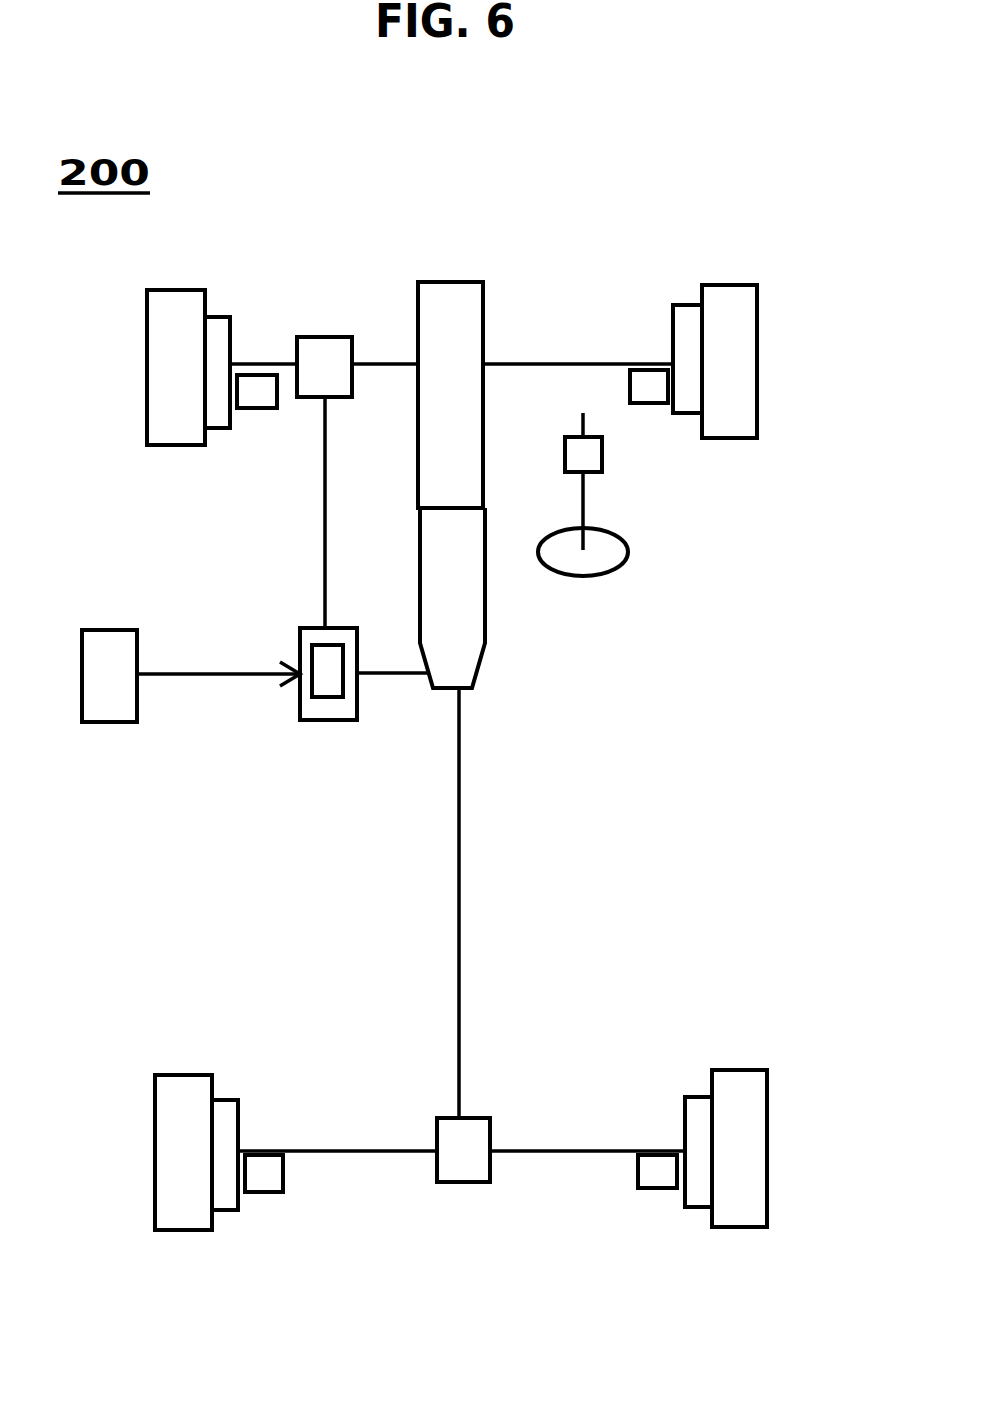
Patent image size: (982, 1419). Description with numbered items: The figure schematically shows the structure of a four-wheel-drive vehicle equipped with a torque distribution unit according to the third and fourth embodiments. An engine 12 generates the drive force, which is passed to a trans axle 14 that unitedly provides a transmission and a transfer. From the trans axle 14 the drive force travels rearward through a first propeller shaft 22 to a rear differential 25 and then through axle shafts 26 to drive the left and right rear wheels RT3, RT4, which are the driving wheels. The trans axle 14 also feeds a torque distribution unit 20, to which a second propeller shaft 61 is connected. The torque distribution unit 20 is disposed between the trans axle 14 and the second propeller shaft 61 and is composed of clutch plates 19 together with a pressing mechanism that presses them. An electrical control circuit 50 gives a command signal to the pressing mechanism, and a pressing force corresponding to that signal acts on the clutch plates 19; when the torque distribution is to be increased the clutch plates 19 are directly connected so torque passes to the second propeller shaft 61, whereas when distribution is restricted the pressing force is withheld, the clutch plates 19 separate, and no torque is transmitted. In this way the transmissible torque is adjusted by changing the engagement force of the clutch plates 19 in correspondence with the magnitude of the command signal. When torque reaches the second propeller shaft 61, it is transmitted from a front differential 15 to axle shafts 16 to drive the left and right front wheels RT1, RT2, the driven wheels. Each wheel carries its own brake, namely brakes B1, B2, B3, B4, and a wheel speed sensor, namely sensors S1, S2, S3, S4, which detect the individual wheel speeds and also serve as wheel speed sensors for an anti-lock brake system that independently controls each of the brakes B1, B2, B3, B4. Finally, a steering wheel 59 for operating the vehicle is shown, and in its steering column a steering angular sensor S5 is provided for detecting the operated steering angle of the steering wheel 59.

The engine 12 is at (452, 282).
The trans axle 14 is at (485, 582).
The front differential 15 is at (322, 337).
The axle shafts 16 is at (258, 364).
The second propeller shaft 61 is at (325, 557).
The torque distribution unit 20 is at (297, 706).
The clutch plates 19 is at (330, 697).
The electrical control circuit 50 is at (115, 722).
The first propeller shaft 22 is at (462, 990).
The rear differential 25 is at (477, 1155).
The axle shafts 26 is at (313, 1152).
The steering wheel 59 is at (603, 557).
The steering angular sensor S5 is at (590, 472).
The front wheel RT1 is at (170, 380).
The brake B1 is at (210, 318).
The wheel speed sensor S1 is at (252, 408).
The brake B2 is at (688, 305).
The front wheel RT2 is at (730, 360).
The wheel speed sensor S2 is at (653, 403).
The rear wheel RT3 is at (178, 1167).
The brake B3 is at (224, 1100).
The wheel speed sensor S3 is at (262, 1192).
The brake B4 is at (697, 1097).
The rear wheel RT4 is at (748, 1183).
The wheel speed sensor S4 is at (662, 1188).